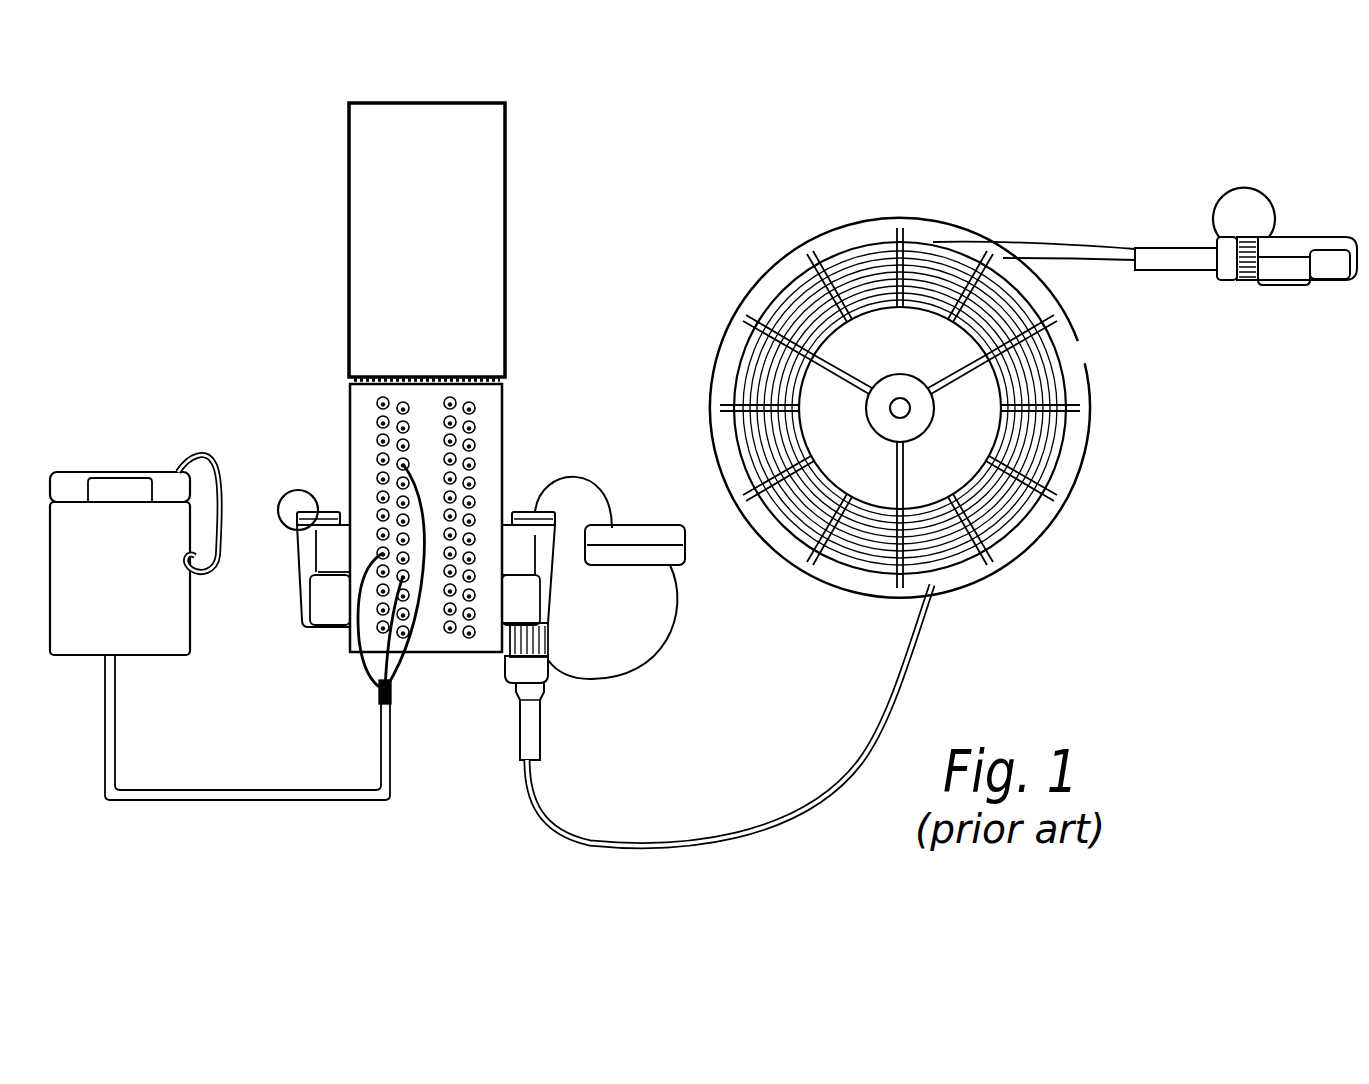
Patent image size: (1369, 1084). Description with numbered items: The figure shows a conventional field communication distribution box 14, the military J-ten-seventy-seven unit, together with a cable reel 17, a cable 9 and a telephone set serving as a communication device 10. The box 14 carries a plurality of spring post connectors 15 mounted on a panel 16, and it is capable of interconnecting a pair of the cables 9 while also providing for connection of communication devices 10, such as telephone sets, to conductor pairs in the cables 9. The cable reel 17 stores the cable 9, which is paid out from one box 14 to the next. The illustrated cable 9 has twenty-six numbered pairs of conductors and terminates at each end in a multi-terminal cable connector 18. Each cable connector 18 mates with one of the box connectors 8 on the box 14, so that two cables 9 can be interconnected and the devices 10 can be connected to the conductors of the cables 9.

The box connector 8 is at (316, 600).
The cable 9 is at (748, 828).
The communication device 10 is at (147, 637).
The field communication distribution box 14 is at (335, 381).
The spring post connector 15 is at (472, 464).
The panel 16 is at (492, 403).
The cable reel 17 is at (1066, 495).
The cable connector 18 is at (517, 665).